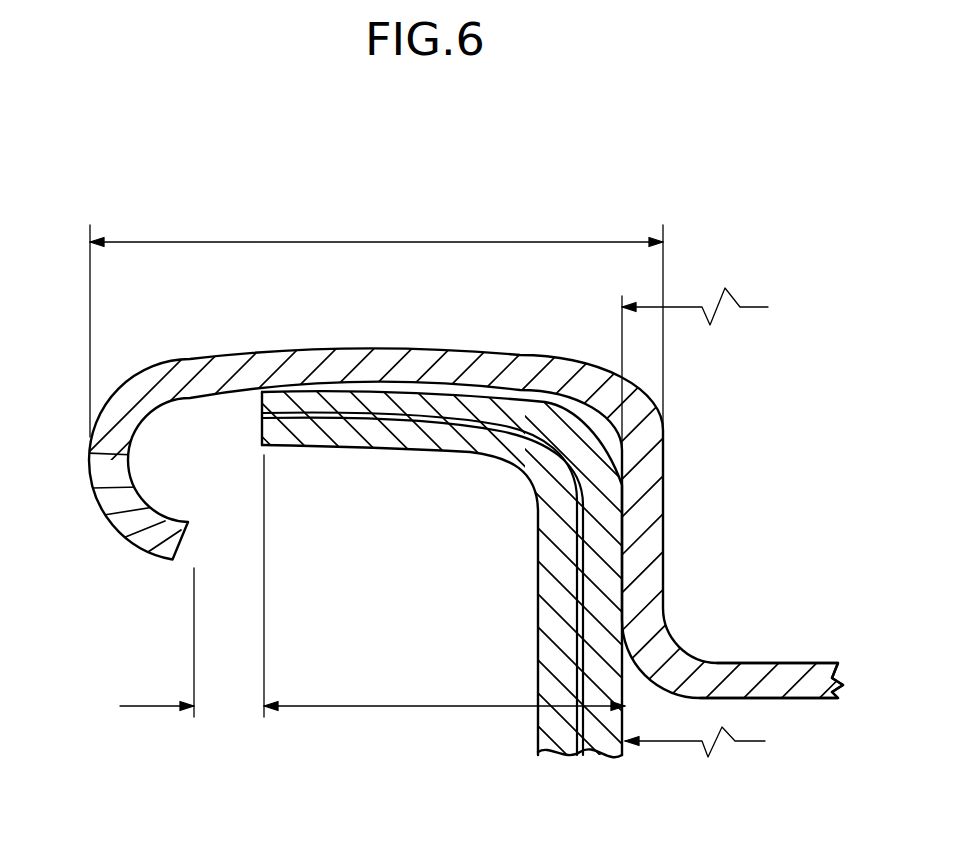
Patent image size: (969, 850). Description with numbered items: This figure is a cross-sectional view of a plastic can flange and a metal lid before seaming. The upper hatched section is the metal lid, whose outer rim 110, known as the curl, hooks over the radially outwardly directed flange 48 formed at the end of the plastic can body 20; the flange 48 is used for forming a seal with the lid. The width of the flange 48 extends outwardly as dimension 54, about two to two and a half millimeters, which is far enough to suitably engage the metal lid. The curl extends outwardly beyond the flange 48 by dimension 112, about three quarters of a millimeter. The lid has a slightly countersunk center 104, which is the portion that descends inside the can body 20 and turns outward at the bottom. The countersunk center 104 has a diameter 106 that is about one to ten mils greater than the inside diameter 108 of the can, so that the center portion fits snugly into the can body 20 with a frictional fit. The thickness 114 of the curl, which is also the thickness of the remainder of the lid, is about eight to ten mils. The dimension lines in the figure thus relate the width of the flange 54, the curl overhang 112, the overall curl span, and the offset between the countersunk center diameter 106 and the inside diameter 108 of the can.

The thickness of the curl 114 is at (206, 437).
The countersunk center 104 is at (748, 665).
The can body 20 is at (562, 752).
The flange 48 is at (420, 447).
The outer rim 110 is at (380, 242).
The diameter 106 is at (692, 307).
The extent beyond the flange 112 is at (233, 705).
The width of the flange 54 is at (400, 712).
The inside diameter 108 is at (675, 742).